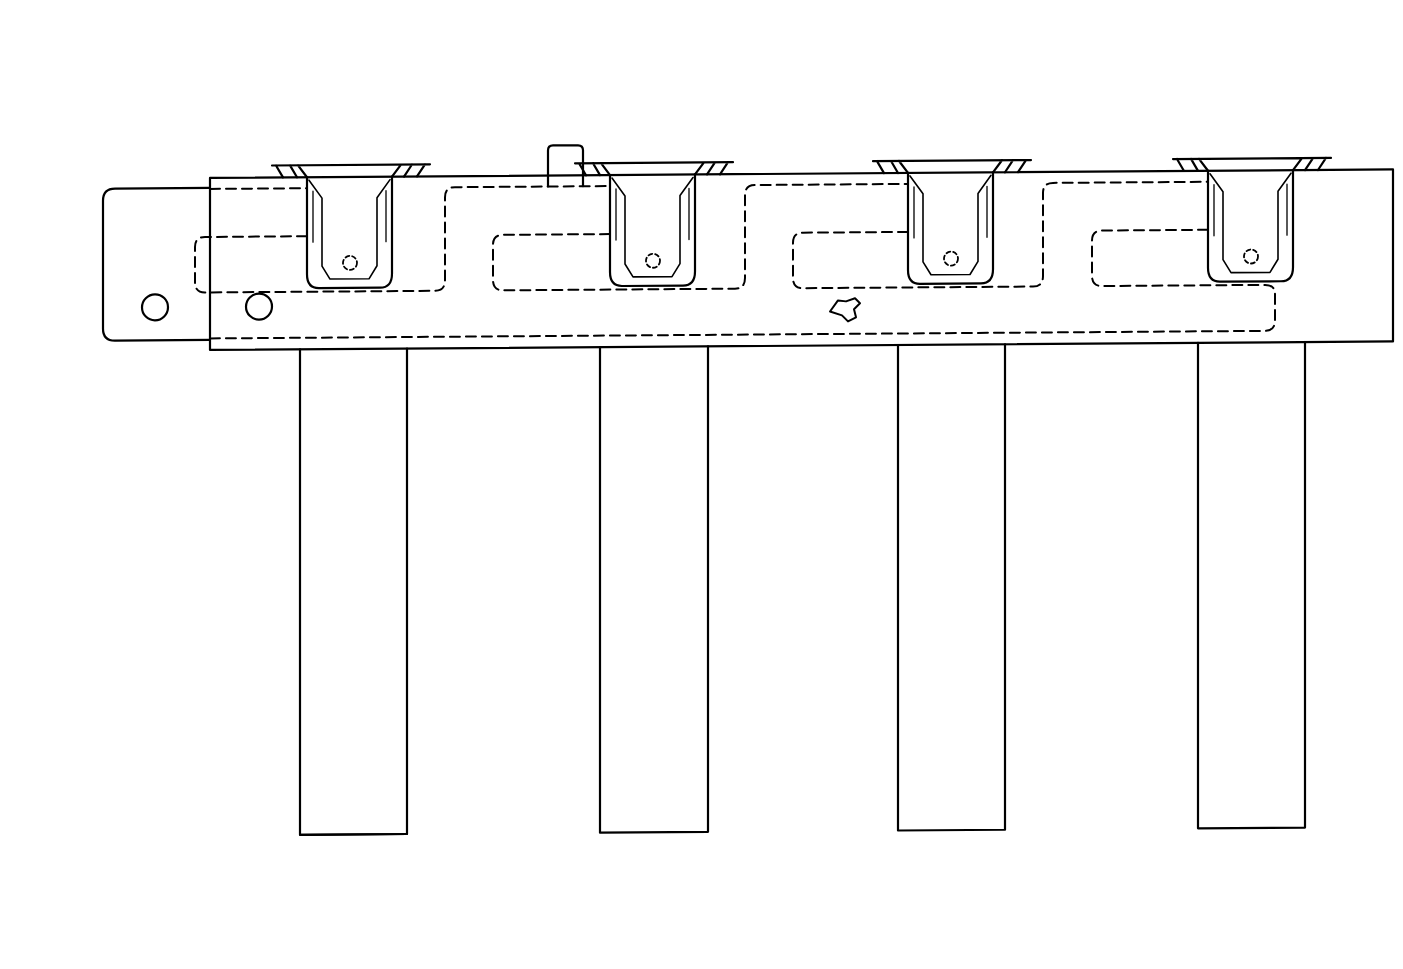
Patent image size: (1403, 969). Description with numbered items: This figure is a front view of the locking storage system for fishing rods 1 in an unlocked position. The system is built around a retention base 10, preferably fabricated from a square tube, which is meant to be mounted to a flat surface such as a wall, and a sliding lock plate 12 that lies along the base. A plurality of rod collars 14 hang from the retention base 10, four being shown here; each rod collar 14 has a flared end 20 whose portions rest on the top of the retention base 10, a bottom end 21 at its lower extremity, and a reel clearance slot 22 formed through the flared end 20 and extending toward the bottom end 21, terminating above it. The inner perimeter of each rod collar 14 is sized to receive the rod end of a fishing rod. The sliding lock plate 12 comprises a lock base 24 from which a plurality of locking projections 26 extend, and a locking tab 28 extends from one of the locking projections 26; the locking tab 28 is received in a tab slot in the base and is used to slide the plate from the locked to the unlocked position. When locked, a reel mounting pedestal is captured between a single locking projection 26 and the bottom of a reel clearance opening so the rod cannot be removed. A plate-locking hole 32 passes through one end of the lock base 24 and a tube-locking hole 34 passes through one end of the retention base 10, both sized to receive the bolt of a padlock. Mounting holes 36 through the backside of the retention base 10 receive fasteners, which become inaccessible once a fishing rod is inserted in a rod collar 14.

The locking storage system for fishing rods 1 is at (746, 452).
The retention base 10 is at (1357, 349).
The sliding lock plate 12 is at (118, 339).
The rod collar 14 is at (395, 516).
The flared end 20 is at (420, 164).
The bottom end 21 is at (320, 840).
The reel clearance slot 22 is at (350, 183).
The lock base 24 is at (853, 327).
The locking projection 26 is at (196, 191).
The locking tab 28 is at (565, 148).
The plate-locking hole 32 is at (160, 319).
The tube-locking hole 34 is at (262, 320).
The mounting hole 36 is at (653, 247).